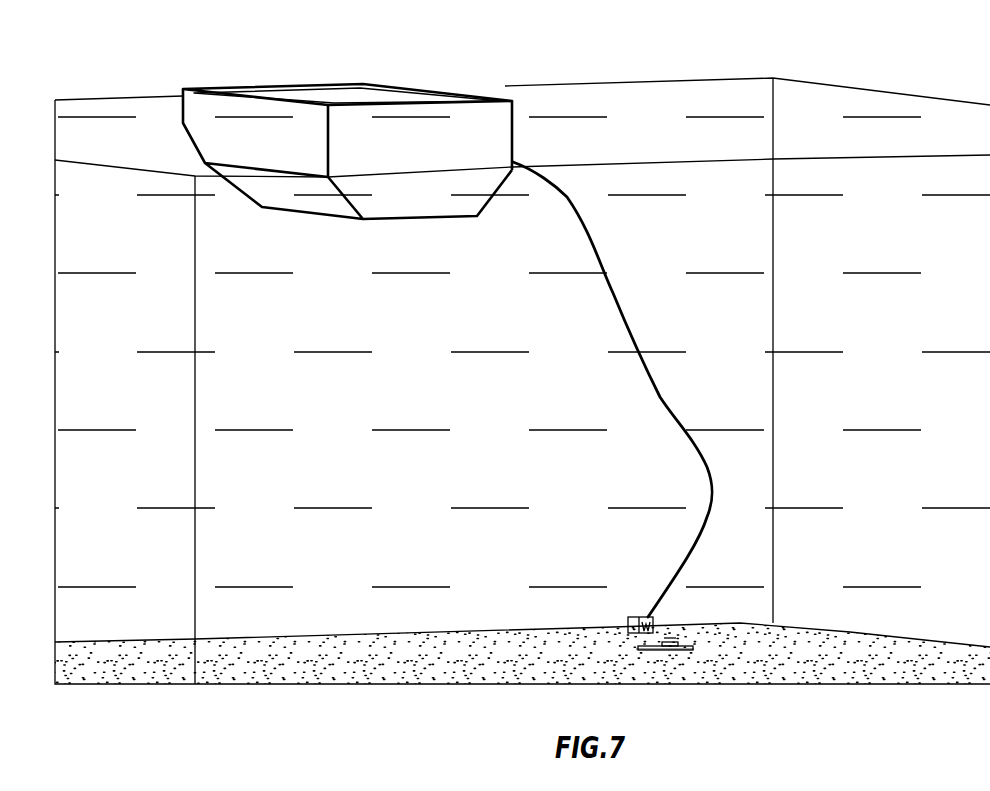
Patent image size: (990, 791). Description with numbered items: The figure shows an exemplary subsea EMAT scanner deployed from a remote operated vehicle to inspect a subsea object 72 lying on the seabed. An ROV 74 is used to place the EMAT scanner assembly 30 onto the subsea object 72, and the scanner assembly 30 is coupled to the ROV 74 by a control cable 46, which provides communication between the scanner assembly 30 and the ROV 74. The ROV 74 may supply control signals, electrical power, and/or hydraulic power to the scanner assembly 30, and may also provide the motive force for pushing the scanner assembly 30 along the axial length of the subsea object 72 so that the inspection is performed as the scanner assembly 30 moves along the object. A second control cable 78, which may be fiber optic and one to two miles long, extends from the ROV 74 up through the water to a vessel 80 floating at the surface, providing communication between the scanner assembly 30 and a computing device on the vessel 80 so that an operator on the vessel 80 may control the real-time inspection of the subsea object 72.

The vessel 80 is at (515, 110).
The second control cable 78 is at (597, 240).
The ROV 74 is at (637, 617).
The subsea object 72 is at (683, 652).
The control cable 46 is at (663, 640).
The EMAT scanner assembly 30 is at (630, 647).